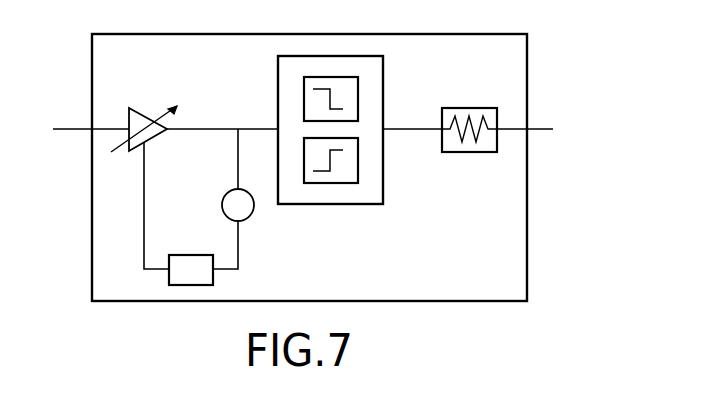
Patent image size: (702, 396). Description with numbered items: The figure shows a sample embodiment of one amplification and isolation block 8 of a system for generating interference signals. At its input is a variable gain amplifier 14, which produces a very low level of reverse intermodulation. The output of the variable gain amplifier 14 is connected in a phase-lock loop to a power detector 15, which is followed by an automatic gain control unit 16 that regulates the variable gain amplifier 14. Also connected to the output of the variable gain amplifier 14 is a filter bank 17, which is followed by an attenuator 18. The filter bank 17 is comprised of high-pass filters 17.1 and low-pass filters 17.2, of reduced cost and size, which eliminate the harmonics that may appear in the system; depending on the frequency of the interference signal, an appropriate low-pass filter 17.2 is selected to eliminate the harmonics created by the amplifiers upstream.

The amplification and isolation block 8 is at (555, 77).
The variable gain amplifier 14 is at (126, 109).
The power detector 15 is at (252, 213).
The automatic gain control unit 16 is at (180, 254).
The filter bank 17 is at (383, 72).
The high-pass filters 17.1 is at (357, 170).
The low-pass filters 17.2 is at (304, 92).
The attenuator 18 is at (463, 107).